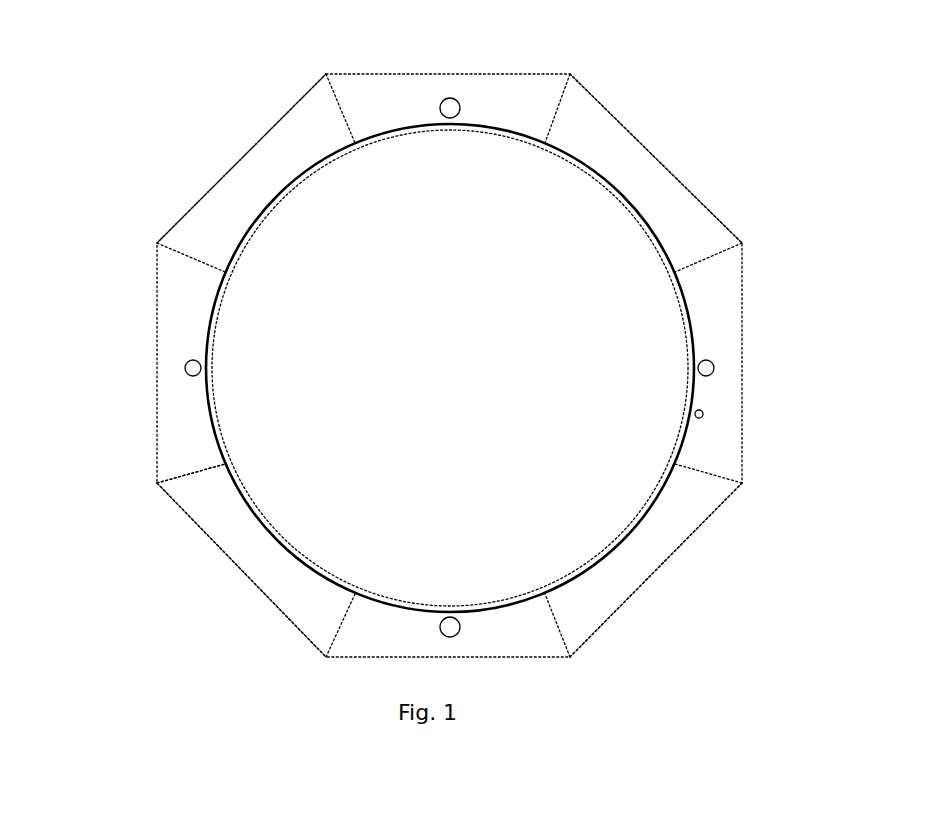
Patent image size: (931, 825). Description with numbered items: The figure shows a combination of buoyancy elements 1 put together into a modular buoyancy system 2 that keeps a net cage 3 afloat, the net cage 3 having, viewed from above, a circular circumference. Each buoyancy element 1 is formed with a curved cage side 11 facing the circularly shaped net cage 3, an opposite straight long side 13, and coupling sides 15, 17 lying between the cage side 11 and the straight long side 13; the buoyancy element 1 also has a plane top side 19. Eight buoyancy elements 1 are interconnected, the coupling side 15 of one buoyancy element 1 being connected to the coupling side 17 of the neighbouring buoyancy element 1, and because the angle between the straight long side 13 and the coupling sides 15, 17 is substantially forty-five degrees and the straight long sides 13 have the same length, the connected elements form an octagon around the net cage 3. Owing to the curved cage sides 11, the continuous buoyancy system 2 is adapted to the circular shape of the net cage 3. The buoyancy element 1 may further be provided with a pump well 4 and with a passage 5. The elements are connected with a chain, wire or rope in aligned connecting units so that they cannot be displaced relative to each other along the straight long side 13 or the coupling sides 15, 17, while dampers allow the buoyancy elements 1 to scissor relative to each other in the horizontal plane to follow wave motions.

The buoyancy element 1 is at (251, 96).
The buoyancy system 2 is at (196, 176).
The net cage 3 is at (540, 183).
The pump well 4 is at (186, 363).
The passage 5 is at (703, 417).
The cage side 11 is at (690, 313).
The straight long side 13 is at (652, 573).
The coupling side 15 is at (200, 465).
The coupling side 17 is at (213, 465).
The top side 19 is at (202, 232).